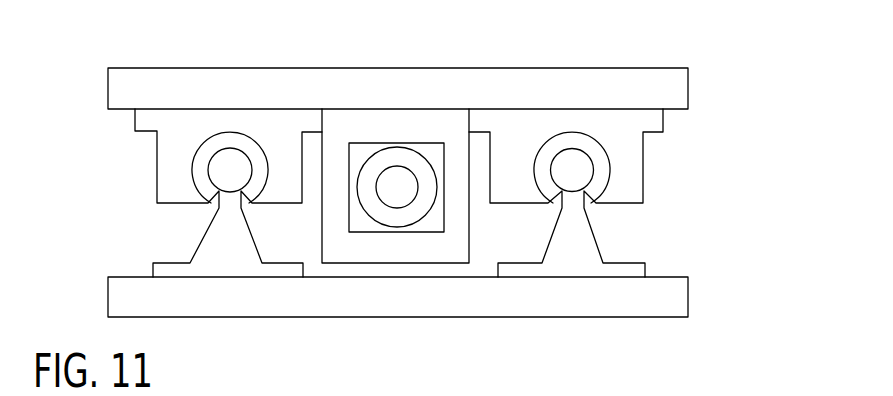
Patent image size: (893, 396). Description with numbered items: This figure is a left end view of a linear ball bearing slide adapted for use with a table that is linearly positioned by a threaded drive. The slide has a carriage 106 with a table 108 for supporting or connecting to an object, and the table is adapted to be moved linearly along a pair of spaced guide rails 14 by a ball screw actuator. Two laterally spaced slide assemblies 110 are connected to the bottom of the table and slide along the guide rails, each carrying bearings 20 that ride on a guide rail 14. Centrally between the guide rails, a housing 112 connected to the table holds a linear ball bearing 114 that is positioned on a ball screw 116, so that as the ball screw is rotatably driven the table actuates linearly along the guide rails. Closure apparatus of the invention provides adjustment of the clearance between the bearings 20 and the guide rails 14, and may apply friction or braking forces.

The carriage 106 is at (700, 81).
The table 108 is at (513, 68).
The slide assemblies 110 is at (157, 204).
The housings 112 is at (410, 263).
The linear ball bearings 114 is at (399, 215).
The ball screw 116 is at (397, 180).
The bearings 20 is at (202, 142).
The guide rails 14 is at (208, 172).